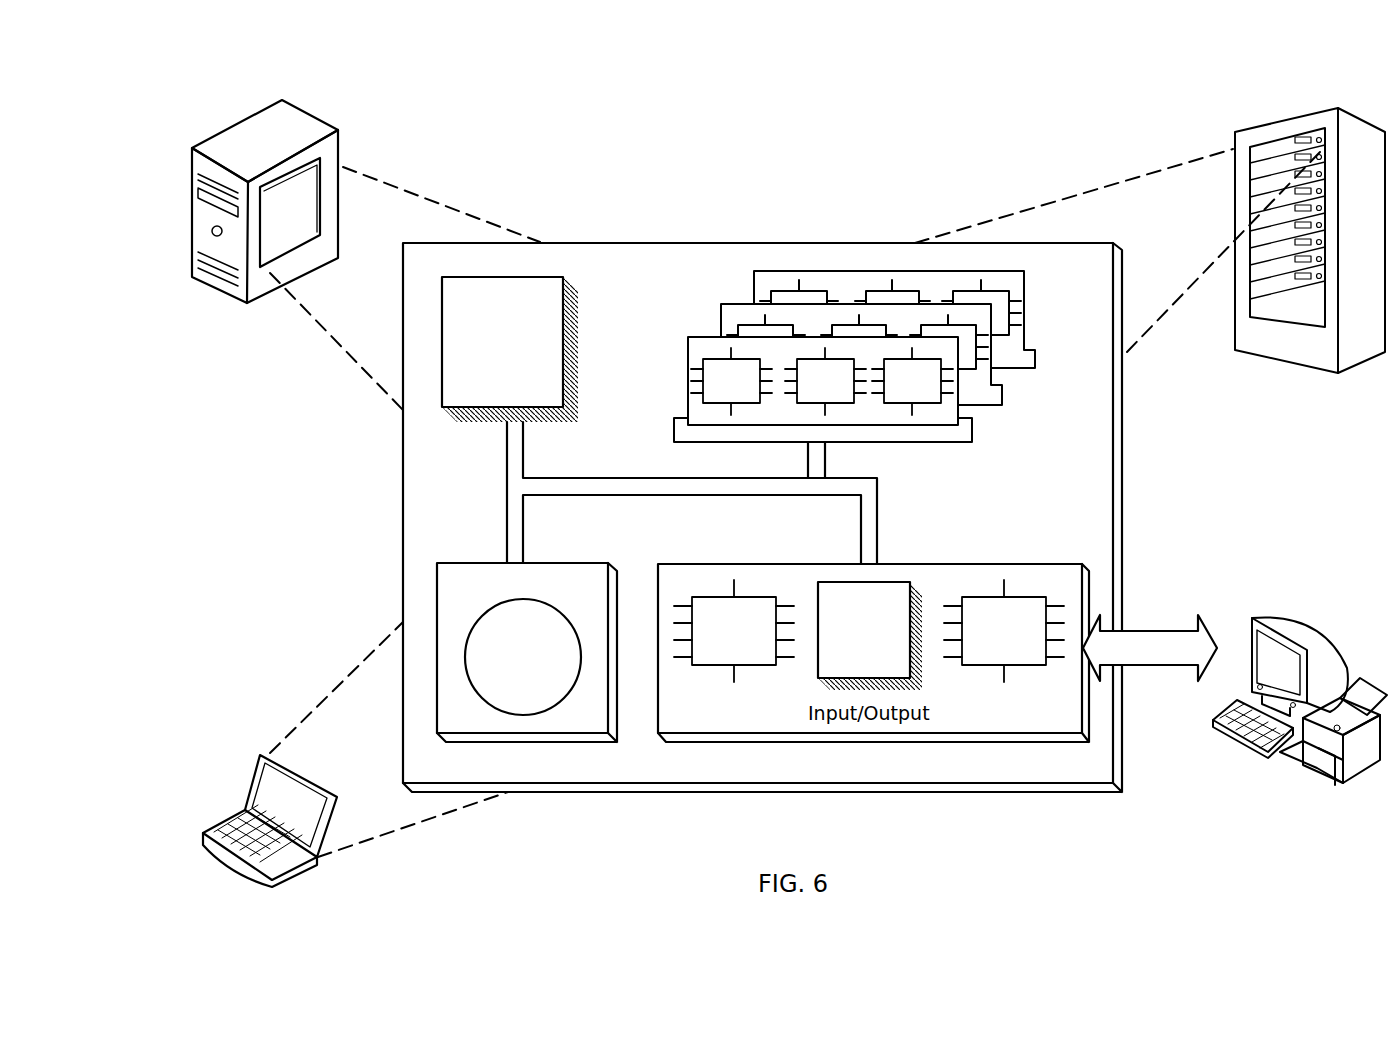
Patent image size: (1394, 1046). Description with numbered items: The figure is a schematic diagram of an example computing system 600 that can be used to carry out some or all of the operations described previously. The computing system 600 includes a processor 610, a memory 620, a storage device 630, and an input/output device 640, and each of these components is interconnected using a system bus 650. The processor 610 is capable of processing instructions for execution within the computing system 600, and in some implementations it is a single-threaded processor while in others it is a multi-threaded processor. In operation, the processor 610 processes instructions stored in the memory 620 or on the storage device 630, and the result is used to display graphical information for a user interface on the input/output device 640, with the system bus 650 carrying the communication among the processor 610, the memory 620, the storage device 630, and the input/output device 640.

The computing system 600 is at (190, 70).
The processor 610 is at (548, 395).
The memory 620 is at (1028, 402).
The storage device 630 is at (598, 725).
The input/output device 640 is at (1253, 618).
The system bus 650 is at (695, 497).